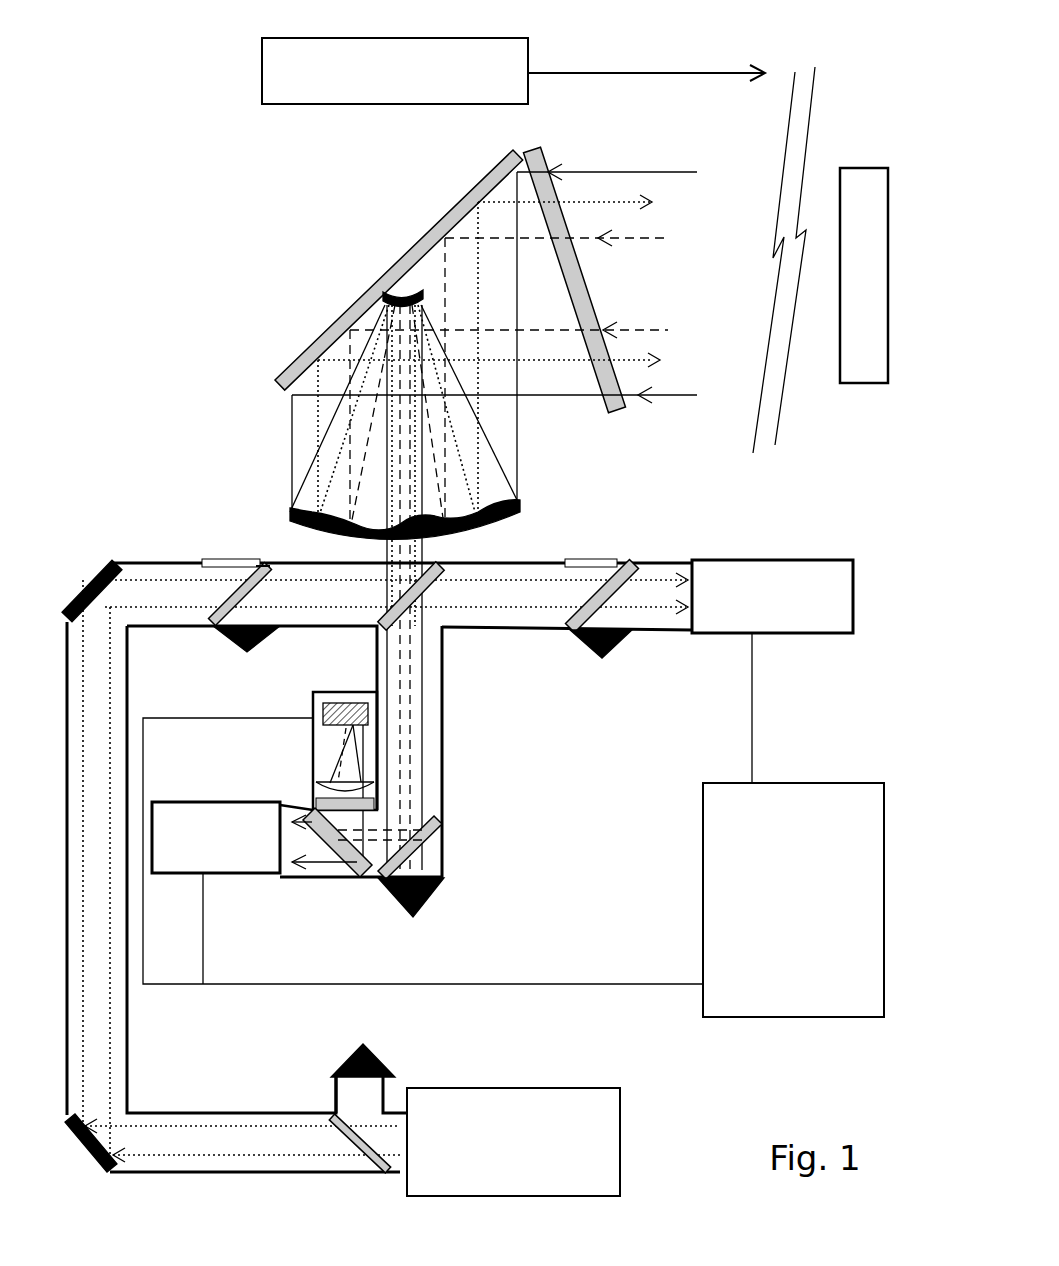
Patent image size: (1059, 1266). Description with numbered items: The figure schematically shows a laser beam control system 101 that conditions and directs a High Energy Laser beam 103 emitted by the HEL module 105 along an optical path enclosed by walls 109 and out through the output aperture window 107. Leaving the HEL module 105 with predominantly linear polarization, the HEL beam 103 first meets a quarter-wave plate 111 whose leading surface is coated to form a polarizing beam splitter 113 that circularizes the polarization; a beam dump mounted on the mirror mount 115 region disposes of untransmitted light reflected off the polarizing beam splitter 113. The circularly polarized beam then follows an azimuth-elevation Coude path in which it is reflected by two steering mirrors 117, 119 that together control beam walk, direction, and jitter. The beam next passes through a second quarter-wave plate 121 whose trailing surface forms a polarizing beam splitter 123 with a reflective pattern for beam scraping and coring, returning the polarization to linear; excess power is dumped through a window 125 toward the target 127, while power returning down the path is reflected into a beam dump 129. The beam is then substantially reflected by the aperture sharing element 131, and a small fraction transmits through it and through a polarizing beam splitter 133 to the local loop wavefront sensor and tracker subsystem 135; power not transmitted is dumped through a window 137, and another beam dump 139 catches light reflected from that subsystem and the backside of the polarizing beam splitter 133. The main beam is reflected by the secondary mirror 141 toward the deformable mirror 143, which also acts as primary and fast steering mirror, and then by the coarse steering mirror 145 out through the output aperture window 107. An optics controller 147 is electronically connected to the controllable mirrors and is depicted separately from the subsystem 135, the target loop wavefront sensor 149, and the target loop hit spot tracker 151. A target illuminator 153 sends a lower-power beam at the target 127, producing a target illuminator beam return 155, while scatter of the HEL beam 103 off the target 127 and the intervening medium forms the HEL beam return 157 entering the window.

The laser beam control system 101 is at (148, 124).
The HEL beam 103 is at (643, 198).
The HEL module 105 is at (608, 1139).
The output aperture window 107 is at (540, 160).
The walls 109 is at (160, 1112).
The quarter-wave plate 111 is at (333, 1120).
The polarizing beam splitter 113 is at (390, 1075).
The steering mirror 115 is at (360, 1044).
The steering mirror 117 is at (78, 1140).
The steering mirror 119 is at (77, 600).
The quarter-wave plate 121 is at (262, 566).
The polarizing beam splitter 123 is at (207, 604).
The window 125 is at (225, 562).
The target 127 is at (858, 166).
The beam dump 129 is at (277, 633).
The aperture sharing element 131 is at (432, 580).
The polarizing beam splitter 133 is at (633, 562).
The local loop wavefront sensor and tracker subsystem 135 is at (740, 560).
The window 137 is at (592, 560).
The beam dump 139 is at (605, 658).
The secondary mirror 141 is at (391, 296).
The deformable mirror 143 is at (290, 510).
The coarse steering mirror 145 is at (425, 245).
The optics controller 147 is at (796, 997).
The target loop wavefront sensor 149 is at (226, 812).
The target loop hit spot tracker 151 is at (325, 706).
The target illuminator 153 is at (317, 38).
The target illuminator beam return 155 is at (630, 243).
The HEL beam return 157 is at (677, 163).